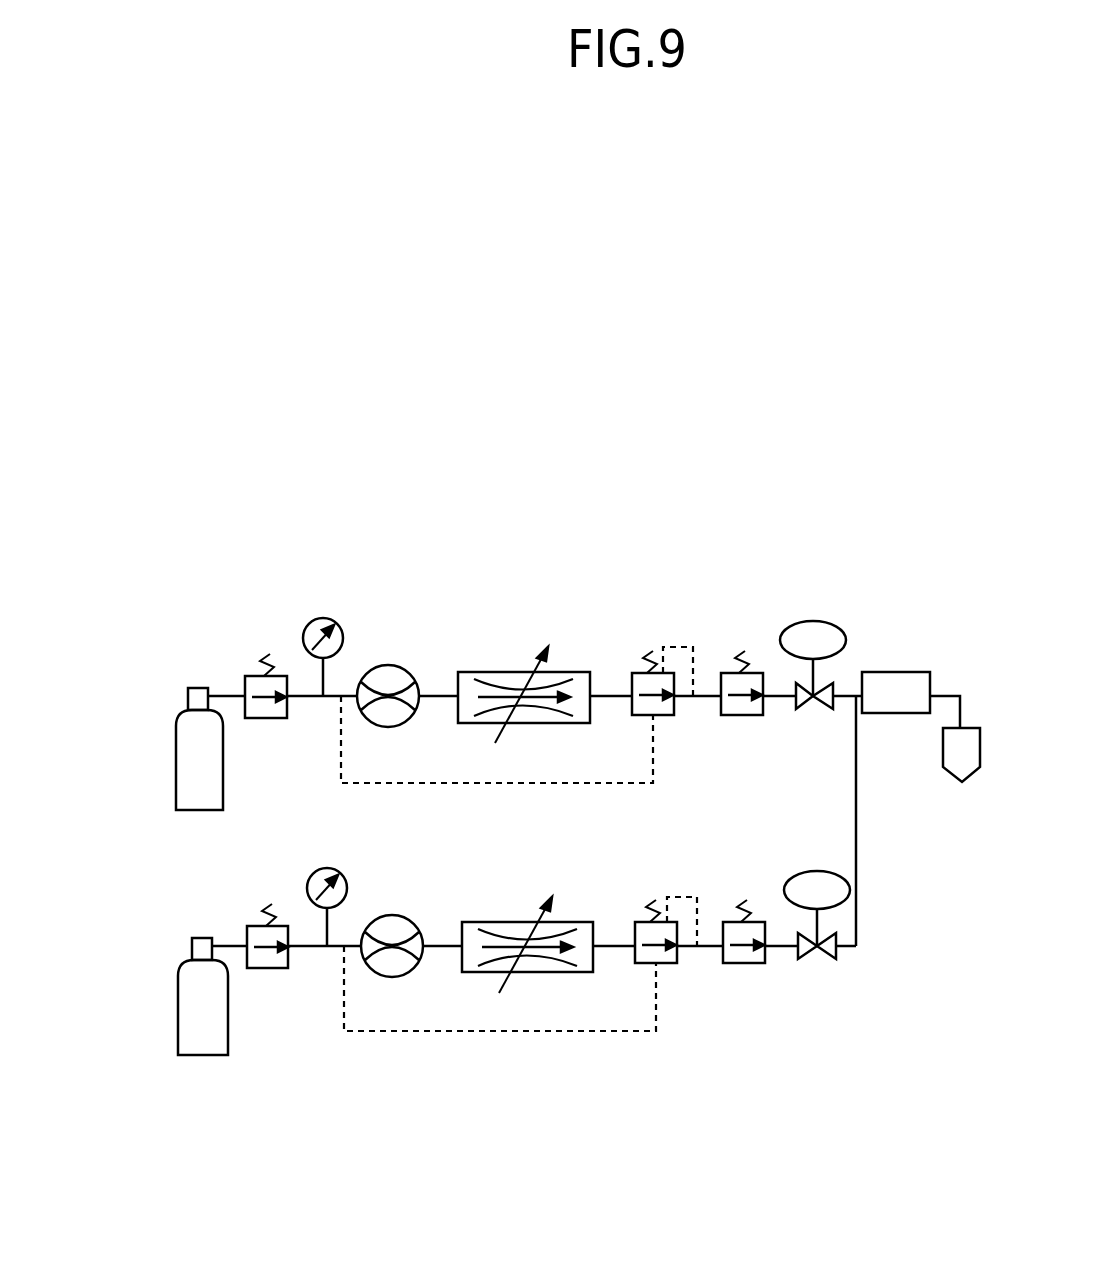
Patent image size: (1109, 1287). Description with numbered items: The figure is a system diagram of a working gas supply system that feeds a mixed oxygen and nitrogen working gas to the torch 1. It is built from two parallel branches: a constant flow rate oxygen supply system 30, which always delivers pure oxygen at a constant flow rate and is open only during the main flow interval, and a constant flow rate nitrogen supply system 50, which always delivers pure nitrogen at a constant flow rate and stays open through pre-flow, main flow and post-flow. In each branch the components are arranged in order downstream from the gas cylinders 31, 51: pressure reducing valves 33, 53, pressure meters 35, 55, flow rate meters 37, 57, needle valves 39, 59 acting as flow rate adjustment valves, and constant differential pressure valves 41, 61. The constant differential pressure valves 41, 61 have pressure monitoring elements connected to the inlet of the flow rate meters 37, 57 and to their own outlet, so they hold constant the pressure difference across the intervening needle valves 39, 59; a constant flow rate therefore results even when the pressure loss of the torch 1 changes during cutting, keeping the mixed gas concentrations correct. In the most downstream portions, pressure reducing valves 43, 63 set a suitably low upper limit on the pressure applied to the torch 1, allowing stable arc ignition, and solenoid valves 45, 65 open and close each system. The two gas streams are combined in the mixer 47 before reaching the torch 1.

The torch 1 is at (943, 760).
The constant flow rate oxygen supply system 30 is at (385, 612).
The gas cylinder 31 is at (223, 762).
The pressure reducing valve 33 is at (250, 676).
The pressure meter 35 is at (322, 618).
The flow rate meter 37 is at (386, 665).
The needle valve 39 is at (483, 672).
The constant differential pressure valve 41 is at (640, 673).
The pressure reducing valve 43 is at (730, 673).
The solenoid valve 45 is at (818, 621).
The gas mixer 47 is at (890, 672).
The constant flow rate nitrogen supply system 50 is at (370, 1037).
The gas cylinder 51 is at (228, 1012).
The pressure reducing valve 53 is at (252, 926).
The pressure meter 55 is at (326, 868).
The flow rate meter 57 is at (390, 915).
The needle valve 59 is at (486, 922).
The constant differential pressure valve 61 is at (643, 922).
The pressure reducing valve 63 is at (732, 922).
The solenoid valve 65 is at (812, 871).